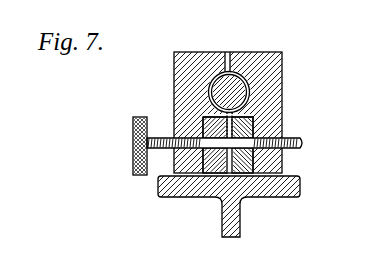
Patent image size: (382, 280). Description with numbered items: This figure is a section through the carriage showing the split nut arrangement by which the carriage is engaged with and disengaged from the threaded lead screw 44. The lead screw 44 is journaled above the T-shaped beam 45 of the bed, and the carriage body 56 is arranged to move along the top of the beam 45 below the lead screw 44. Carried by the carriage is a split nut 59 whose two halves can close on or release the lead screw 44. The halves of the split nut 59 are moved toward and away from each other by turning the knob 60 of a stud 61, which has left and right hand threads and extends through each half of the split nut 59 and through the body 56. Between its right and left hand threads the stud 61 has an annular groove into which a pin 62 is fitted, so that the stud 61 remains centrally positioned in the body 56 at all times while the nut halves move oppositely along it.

The lead screw 44 is at (231, 86).
The split nut 59 is at (267, 53).
The pin 62 is at (207, 128).
The stud 61 is at (214, 143).
The carriage body 56 is at (248, 128).
The knob 60 is at (142, 131).
The T-shaped beam 45 is at (235, 212).